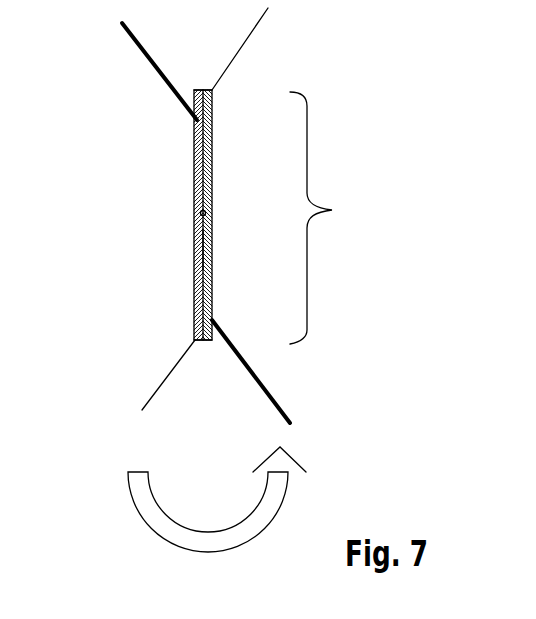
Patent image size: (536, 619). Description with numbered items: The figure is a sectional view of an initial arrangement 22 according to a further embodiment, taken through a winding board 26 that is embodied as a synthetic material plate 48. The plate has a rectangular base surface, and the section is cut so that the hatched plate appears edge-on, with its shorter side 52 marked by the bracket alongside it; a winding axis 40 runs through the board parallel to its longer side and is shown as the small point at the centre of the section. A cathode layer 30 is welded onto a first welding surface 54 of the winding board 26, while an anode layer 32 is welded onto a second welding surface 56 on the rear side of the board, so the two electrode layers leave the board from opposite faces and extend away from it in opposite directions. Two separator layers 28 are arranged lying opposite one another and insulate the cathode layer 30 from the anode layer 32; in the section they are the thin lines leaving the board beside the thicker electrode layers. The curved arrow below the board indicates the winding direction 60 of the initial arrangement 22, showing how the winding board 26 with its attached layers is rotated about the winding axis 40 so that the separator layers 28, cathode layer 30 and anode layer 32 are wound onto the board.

The initial arrangement 22 is at (352, 132).
The winding board 26 is at (212, 183).
The separator layers 28 is at (252, 33).
The cathode layer 30 is at (152, 62).
The anode layer 32 is at (258, 380).
The winding axis 40 is at (201, 213).
The synthetic material plate 48 is at (212, 250).
The shorter side 52 is at (325, 218).
The first welding surface 54 is at (212, 137).
The second welding surface 56 is at (208, 293).
The winding direction 60 is at (143, 505).